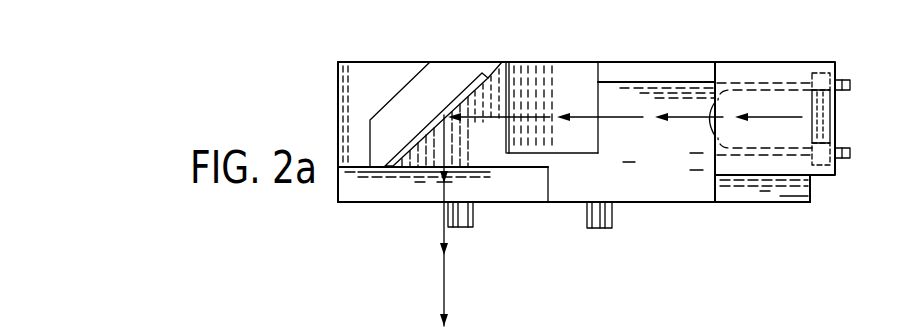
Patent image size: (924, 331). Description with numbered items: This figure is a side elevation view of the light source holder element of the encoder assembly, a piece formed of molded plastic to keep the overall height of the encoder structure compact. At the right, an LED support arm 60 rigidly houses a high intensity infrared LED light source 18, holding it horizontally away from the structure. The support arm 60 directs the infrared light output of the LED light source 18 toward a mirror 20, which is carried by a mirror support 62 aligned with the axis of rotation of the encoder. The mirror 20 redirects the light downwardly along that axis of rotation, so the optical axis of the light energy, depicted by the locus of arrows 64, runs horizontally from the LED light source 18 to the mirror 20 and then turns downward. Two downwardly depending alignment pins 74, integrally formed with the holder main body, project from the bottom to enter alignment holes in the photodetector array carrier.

The LED light source 18 is at (781, 103).
The mirror 20 is at (455, 103).
The LED support arm 60 is at (722, 73).
The mirror support 62 is at (452, 79).
The optical axis 64 is at (633, 117).
The alignment pins 74 is at (460, 223).